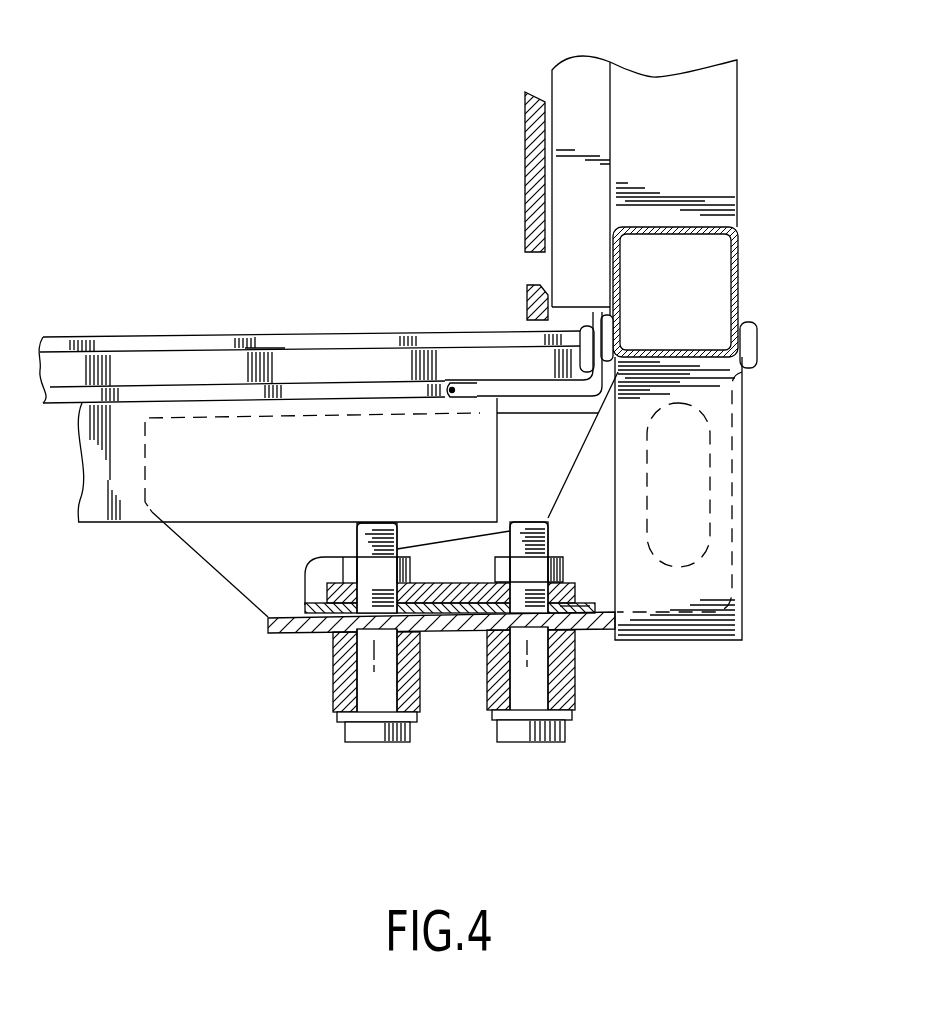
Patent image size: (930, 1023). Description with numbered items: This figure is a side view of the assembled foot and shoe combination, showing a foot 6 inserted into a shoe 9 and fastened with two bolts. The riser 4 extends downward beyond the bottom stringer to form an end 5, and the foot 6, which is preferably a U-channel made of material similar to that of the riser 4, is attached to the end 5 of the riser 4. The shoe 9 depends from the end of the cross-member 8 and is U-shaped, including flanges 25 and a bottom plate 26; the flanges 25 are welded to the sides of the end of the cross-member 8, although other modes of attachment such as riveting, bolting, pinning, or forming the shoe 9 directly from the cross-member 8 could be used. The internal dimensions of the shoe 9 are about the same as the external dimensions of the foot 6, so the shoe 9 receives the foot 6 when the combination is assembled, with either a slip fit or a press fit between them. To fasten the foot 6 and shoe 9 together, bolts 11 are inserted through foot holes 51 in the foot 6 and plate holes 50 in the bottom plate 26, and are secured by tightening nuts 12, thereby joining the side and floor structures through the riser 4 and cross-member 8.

The riser 4 is at (739, 191).
The end 5 is at (697, 655).
The foot 6 is at (568, 478).
The cross-member 8 is at (92, 545).
The shoe 9 is at (155, 559).
The bolt 11 is at (382, 745).
The nut 12 is at (341, 561).
The flange 25 is at (222, 583).
The bottom plate 26 is at (268, 635).
The shoe hole 50 is at (340, 630).
The foot hole 51 is at (560, 606).